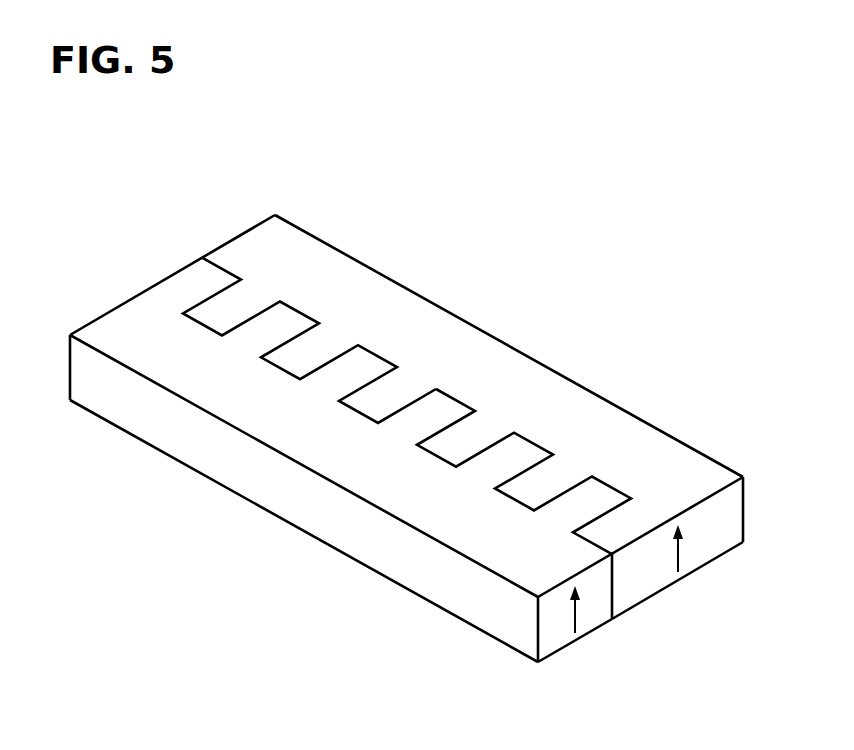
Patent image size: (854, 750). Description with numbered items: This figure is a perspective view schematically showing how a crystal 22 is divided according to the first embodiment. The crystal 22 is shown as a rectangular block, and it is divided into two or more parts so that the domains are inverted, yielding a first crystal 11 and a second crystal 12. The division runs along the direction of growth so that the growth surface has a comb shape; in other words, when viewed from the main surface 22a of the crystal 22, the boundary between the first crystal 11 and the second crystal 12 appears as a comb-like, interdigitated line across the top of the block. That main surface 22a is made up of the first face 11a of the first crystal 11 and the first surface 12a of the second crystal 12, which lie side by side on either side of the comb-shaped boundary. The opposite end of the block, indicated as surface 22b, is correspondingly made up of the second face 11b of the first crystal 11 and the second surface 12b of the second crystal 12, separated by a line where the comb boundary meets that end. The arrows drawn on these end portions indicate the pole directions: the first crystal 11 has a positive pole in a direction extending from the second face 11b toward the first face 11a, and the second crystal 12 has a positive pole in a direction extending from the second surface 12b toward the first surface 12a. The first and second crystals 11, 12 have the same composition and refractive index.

The crystal 22 is at (76, 257).
The main surface of the crystal 22a is at (220, 176).
The end surface of composite body 22b is at (673, 702).
The first crystal 11 is at (90, 375).
The second crystal 12 is at (727, 513).
The first face of the first crystal 11a is at (125, 333).
The first surface of the second crystal 12a is at (252, 255).
The second face of the first crystal 11b is at (583, 638).
The second surface of the second crystal 12b is at (662, 600).